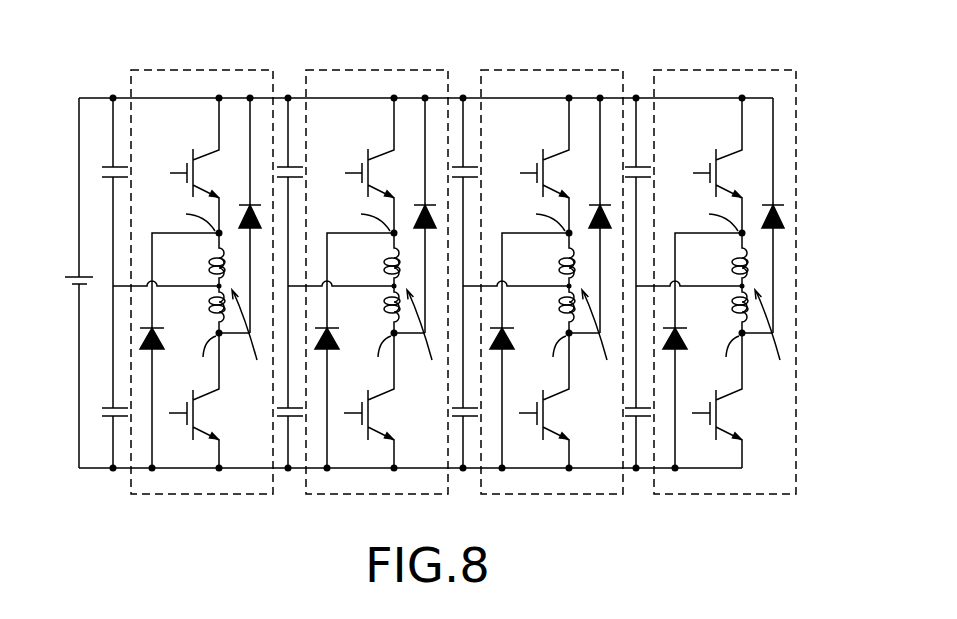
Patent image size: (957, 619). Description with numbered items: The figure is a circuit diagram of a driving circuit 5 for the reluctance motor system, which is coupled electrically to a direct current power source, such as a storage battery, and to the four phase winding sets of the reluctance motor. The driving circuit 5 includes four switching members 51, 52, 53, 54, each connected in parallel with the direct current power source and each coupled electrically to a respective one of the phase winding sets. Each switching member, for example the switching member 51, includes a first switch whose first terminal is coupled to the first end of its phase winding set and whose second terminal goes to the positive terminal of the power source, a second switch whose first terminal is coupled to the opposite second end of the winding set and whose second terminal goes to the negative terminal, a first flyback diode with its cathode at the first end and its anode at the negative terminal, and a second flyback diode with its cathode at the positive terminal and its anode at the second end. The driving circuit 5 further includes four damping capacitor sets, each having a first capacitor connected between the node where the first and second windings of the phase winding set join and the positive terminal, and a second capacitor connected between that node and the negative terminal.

The driving circuit 5 is at (113, 52).
The switching member 51 is at (195, 70).
The switching member 52 is at (359, 258).
The switching member 53 is at (534, 258).
The switching member 54 is at (707, 258).